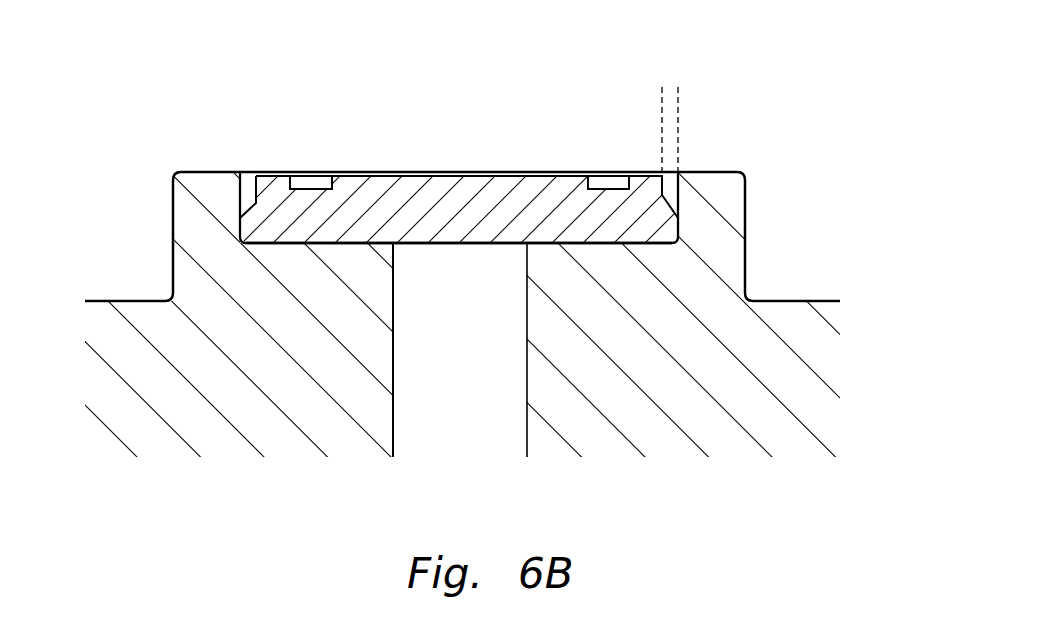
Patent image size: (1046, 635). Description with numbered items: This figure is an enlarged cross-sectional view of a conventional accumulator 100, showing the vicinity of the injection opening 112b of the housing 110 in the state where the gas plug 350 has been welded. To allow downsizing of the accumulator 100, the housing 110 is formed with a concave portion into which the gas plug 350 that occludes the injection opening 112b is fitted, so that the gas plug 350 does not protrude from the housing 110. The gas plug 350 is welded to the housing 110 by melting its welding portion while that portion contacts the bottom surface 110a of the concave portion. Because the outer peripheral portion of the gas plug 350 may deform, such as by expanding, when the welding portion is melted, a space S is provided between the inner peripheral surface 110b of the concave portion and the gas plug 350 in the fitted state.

The accumulator 100 is at (503, 296).
The housing 110 is at (503, 312).
The bottom surface of the concave portion 110a is at (360, 243).
The inner peripheral surface of the concave portion 110b is at (241, 198).
The injection opening 112b is at (393, 422).
The gas plug 350 is at (476, 159).
The space S is at (633, 102).